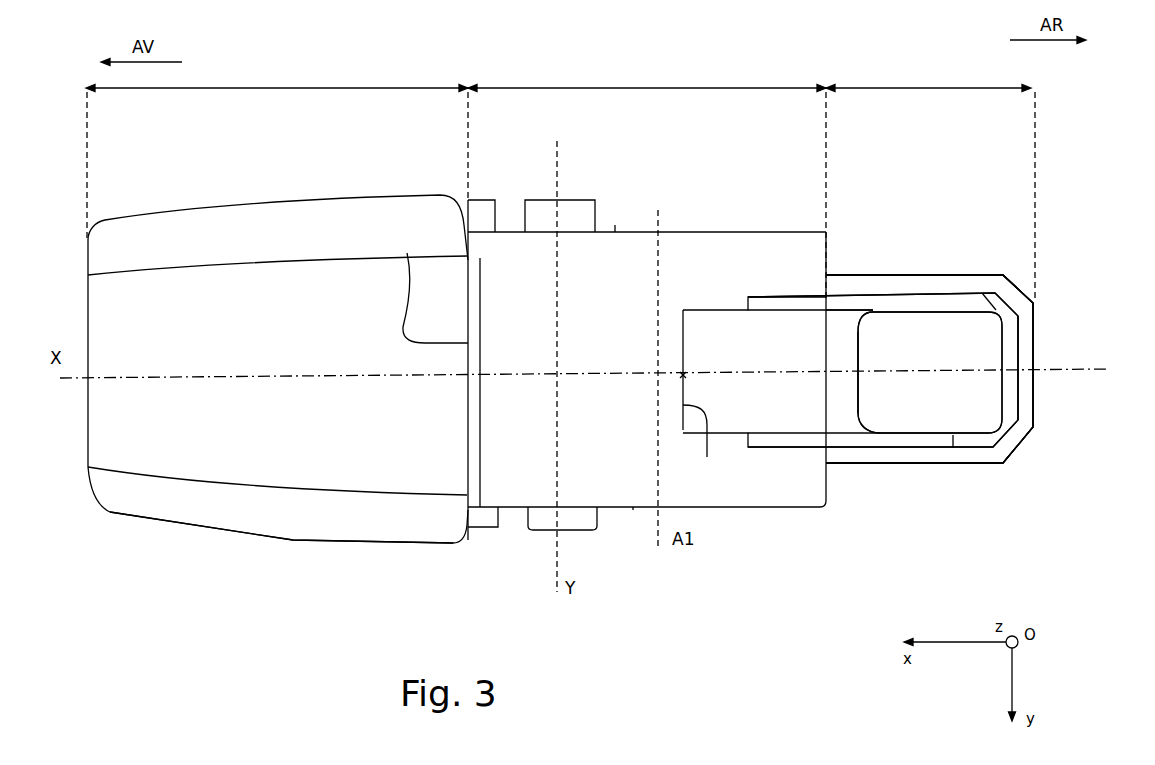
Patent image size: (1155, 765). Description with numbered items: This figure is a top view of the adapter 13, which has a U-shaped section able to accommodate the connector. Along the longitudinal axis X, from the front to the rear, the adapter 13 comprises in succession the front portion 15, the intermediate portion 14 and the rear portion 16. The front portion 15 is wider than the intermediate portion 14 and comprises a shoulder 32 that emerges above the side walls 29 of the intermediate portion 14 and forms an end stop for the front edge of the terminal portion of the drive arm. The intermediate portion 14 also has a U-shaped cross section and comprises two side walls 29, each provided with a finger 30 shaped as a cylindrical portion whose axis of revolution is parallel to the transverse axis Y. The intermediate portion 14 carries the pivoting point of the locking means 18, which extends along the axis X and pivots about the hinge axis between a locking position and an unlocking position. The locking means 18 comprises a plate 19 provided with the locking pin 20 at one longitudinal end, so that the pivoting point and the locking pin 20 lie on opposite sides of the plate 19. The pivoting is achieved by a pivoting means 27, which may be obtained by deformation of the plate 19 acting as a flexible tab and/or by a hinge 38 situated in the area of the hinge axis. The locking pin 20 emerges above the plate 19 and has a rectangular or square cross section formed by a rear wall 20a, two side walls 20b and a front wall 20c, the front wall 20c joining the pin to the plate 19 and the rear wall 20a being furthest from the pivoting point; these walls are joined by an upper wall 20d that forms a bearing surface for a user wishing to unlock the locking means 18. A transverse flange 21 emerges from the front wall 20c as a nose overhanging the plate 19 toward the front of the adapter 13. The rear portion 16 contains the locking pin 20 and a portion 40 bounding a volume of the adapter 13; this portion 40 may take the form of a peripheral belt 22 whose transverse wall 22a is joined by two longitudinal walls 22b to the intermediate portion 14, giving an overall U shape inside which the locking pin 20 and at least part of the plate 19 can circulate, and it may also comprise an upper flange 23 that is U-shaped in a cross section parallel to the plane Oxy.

The adapter 13 is at (461, 572).
The intermediate portion 14 is at (647, 294).
The front portion 15 is at (278, 302).
The rear portion 16 is at (929, 259).
The locking means 18 is at (793, 349).
The plate 19 is at (843, 344).
The locking pin 20 is at (963, 333).
The rear wall 20a is at (1018, 376).
The side walls 20b is at (985, 293).
The front wall 20c is at (853, 362).
The upper wall 20d is at (972, 405).
The transverse flange 21 is at (840, 385).
The peripheral belt 22 is at (951, 493).
The transverse wall 22a is at (1024, 351).
The longitudinal walls 22b is at (893, 275).
The upper flange 23 is at (1017, 280).
The pivoting means 27 is at (683, 375).
The side walls 29 is at (615, 232).
The finger 30 is at (543, 200).
The shoulder 32 is at (407, 253).
The hinge 38 is at (707, 457).
The portion 40 is at (958, 416).